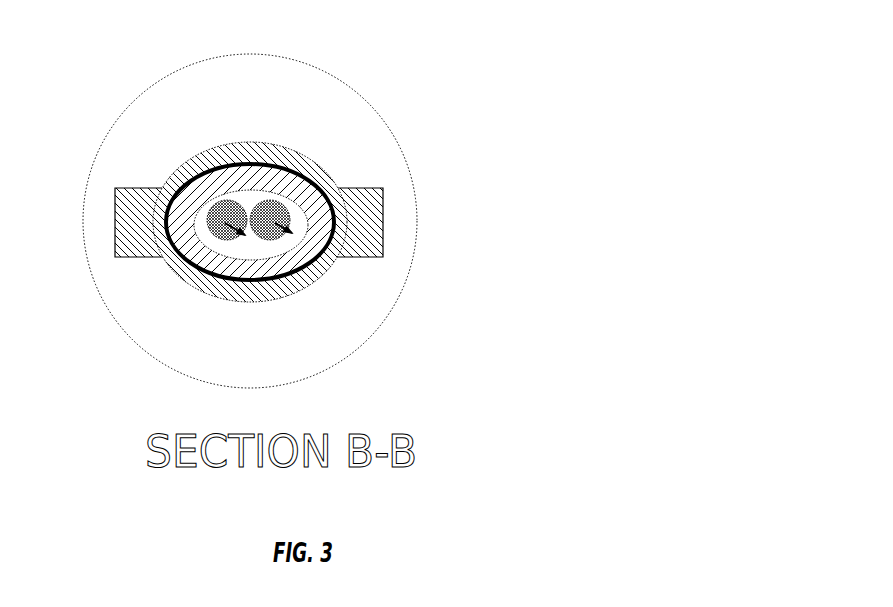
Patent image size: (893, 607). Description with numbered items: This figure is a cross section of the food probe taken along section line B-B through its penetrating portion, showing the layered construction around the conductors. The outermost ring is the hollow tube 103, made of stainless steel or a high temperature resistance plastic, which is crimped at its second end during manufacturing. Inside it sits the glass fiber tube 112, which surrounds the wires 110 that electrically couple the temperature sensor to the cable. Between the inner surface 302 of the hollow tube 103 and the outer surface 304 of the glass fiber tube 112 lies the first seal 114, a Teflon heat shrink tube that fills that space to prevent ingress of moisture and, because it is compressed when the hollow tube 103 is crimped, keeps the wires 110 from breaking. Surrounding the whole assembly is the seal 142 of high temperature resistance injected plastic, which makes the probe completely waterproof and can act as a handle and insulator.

The seal 142 is at (273, 108).
The hollow tube 103 is at (140, 223).
The wires 110 is at (340, 278).
The glass fiber tube 112 is at (287, 172).
The first seal 114 is at (337, 237).
The inner surface 302 is at (172, 194).
The outer surface 304 is at (186, 253).